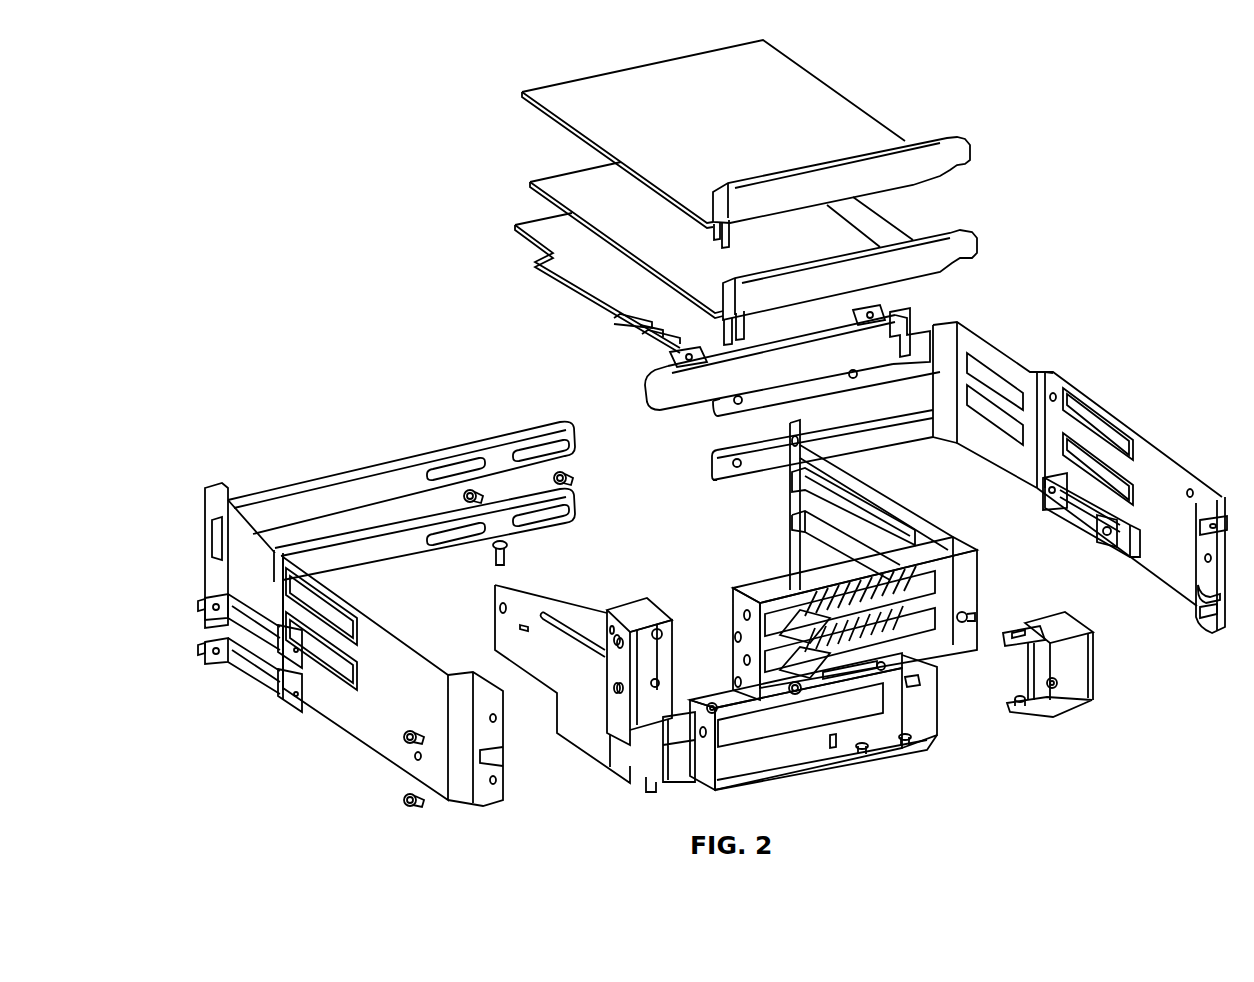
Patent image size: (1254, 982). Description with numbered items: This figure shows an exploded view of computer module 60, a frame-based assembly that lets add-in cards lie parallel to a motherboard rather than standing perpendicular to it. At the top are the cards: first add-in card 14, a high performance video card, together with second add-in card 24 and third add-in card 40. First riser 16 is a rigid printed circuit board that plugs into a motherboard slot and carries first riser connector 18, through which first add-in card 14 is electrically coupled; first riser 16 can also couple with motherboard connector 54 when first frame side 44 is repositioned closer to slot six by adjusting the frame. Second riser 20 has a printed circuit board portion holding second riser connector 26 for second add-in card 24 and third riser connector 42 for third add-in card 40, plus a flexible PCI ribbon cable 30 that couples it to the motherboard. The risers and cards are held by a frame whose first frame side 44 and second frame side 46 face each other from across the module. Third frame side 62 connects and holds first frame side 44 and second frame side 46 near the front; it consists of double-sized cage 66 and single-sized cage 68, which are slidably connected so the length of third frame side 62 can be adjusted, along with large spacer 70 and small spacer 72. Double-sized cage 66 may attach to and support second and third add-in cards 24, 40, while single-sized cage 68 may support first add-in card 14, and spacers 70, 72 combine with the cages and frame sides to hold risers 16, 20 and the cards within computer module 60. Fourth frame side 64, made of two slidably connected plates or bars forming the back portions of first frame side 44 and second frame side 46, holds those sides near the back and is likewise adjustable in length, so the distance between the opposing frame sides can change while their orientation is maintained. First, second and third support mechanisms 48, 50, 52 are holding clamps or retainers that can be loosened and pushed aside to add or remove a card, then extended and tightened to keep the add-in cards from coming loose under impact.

The computer module 60 is at (318, 137).
The third add-in card 40 is at (553, 124).
The second add-in card 24 is at (538, 188).
The first add-in card 14 is at (592, 290).
The fourth frame side 64 is at (404, 446).
The second frame side 46 is at (1168, 447).
The second riser 20 is at (895, 497).
The third riser connector 42 is at (790, 488).
The second riser connector 26 is at (800, 517).
The PCI ribbon cable 30 is at (847, 590).
The first support mechanism 48 is at (1070, 518).
The double-sized cage 66 is at (938, 632).
The small spacer 72 is at (1053, 703).
The large spacer 70 is at (645, 612).
The first riser connector 18 is at (553, 614).
The third support mechanism 52 is at (215, 614).
The second support mechanism 50 is at (290, 698).
The first frame side 44 is at (362, 729).
The first riser 16 is at (583, 740).
The motherboard connector 54 is at (672, 775).
The single-sized cage 68 is at (797, 765).
The third frame side 62 is at (888, 762).